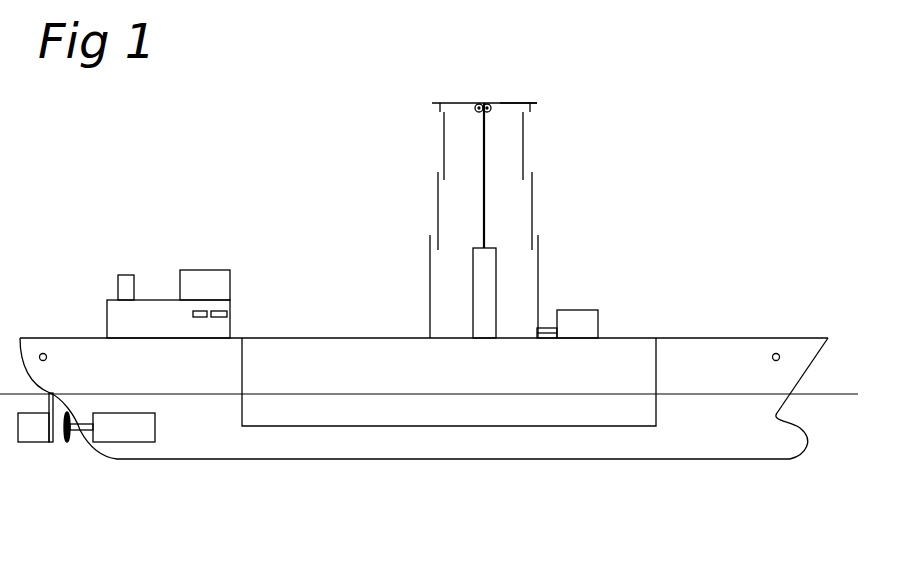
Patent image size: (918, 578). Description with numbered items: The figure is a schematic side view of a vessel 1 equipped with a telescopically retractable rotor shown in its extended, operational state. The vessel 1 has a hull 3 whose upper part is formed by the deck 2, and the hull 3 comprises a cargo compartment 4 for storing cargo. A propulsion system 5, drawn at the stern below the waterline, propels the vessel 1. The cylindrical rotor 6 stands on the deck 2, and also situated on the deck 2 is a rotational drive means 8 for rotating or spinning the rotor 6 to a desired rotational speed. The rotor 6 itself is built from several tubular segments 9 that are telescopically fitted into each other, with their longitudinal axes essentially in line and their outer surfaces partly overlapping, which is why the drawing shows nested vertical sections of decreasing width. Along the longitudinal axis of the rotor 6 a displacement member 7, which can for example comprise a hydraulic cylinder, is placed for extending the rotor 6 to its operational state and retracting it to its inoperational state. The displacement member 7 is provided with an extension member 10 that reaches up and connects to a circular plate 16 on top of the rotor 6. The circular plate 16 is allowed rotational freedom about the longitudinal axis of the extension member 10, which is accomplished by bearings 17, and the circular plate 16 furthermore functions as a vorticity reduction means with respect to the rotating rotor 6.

The vessel 1 is at (423, 355).
The deck 2 is at (632, 338).
The hull 3 is at (780, 447).
The cargo compartment 4 is at (313, 408).
The propulsion system 5 is at (133, 431).
The cylindrical rotor 6 is at (509, 192).
The displacement member 7 is at (485, 273).
The rotational drive means 8 is at (583, 315).
The tubular segments 9 is at (438, 207).
The extension member 10 is at (484, 168).
The circular plate 16 is at (516, 102).
The bearings 17 is at (481, 102).